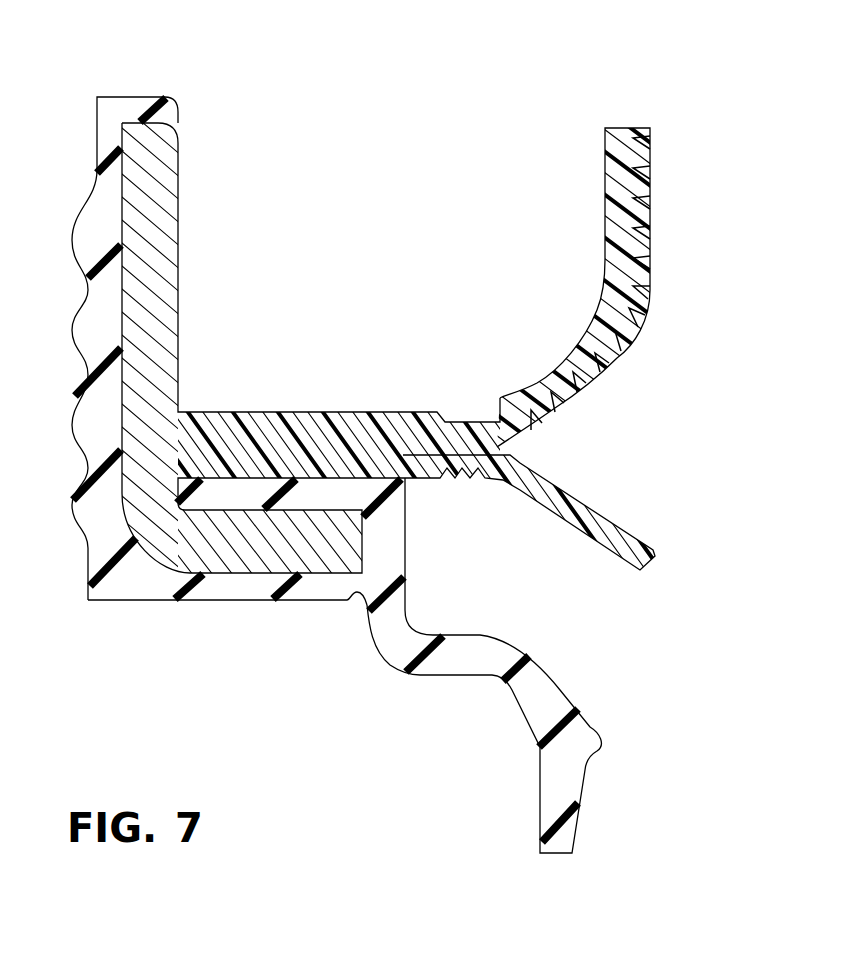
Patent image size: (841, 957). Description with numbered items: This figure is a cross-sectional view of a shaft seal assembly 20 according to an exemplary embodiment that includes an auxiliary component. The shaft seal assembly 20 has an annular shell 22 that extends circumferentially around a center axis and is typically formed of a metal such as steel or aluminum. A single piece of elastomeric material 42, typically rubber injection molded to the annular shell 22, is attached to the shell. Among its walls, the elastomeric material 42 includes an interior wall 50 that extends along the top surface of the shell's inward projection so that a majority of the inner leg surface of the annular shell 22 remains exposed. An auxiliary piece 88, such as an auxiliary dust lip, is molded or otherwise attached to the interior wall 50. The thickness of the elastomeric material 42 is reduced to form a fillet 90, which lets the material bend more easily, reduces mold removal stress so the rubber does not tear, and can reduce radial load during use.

The shaft seal assembly 20 is at (786, 140).
The annular shell 22 is at (217, 577).
The elastomeric material 42 is at (533, 812).
The interior wall 50 is at (315, 497).
The auxiliary piece 88 is at (645, 299).
The fillet 90 is at (352, 603).